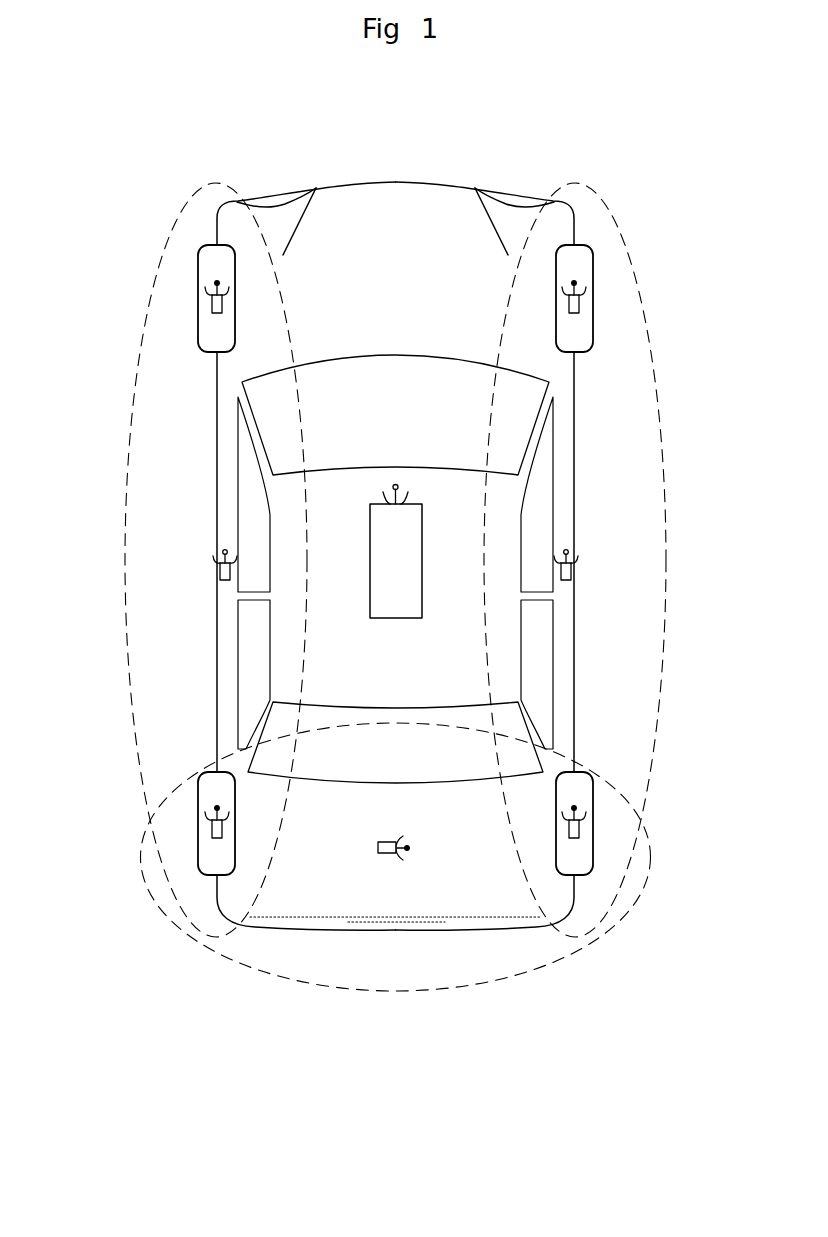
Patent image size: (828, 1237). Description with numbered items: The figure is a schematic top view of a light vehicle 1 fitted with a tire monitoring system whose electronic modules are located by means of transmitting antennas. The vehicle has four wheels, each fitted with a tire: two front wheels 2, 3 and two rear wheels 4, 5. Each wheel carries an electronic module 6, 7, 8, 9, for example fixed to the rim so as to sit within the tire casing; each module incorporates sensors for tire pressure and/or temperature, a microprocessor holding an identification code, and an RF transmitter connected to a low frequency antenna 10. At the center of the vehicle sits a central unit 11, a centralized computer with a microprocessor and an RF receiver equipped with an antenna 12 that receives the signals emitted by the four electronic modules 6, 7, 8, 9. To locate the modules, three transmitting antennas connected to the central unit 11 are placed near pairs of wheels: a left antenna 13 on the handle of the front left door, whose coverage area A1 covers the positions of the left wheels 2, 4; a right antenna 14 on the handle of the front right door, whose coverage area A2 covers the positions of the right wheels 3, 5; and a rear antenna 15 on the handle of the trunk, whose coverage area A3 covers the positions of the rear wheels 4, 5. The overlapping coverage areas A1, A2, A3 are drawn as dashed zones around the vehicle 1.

The light vehicle 1 is at (562, 498).
The front left wheel 2 is at (210, 294).
The front right wheel 3 is at (581, 294).
The rear left wheel 4 is at (211, 819).
The rear right wheel 5 is at (587, 819).
The electronic module 6 is at (211, 312).
The electronic module 7 is at (580, 312).
The electronic module 8 is at (212, 837).
The electronic module 9 is at (579, 837).
The low frequency antenna 10 is at (575, 807).
The central unit 11 is at (398, 583).
The antenna 12 is at (398, 486).
The left antenna 13 is at (220, 580).
The right antenna 14 is at (571, 580).
The rear antenna 15 is at (386, 854).
The coverage area A1 is at (143, 533).
The coverage area A2 is at (650, 535).
The coverage area A3 is at (285, 940).